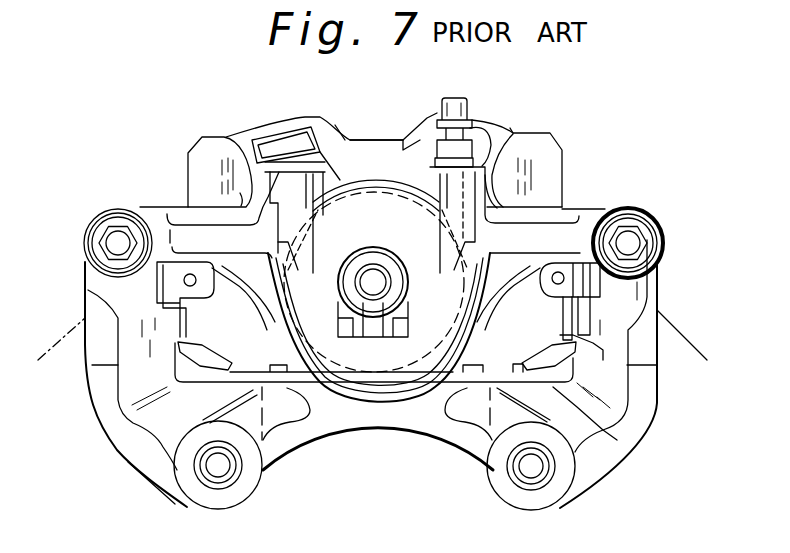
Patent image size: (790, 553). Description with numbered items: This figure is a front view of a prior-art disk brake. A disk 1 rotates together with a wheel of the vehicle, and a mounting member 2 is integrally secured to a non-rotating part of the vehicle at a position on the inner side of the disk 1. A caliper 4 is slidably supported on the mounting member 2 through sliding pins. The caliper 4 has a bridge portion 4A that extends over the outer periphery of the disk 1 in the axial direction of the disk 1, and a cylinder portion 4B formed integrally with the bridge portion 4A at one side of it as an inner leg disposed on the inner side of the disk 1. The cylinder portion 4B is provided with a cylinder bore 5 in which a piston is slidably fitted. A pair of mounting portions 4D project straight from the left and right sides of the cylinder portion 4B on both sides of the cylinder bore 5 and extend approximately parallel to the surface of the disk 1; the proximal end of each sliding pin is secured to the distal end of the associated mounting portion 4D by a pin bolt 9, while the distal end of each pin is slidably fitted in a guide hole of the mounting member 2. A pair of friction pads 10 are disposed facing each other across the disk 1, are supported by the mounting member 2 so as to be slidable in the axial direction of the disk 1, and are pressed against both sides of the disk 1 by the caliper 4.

The disk 1 is at (677, 313).
The mounting member 2 is at (138, 446).
The caliper 4 is at (513, 133).
The bridge portion 4A is at (368, 139).
The cylinder portion 4B is at (352, 357).
The mounting portions 4D is at (212, 236).
The cylinder bore 5 is at (412, 350).
The pin bolt 9 is at (118, 240).
The friction pads 10 is at (532, 337).